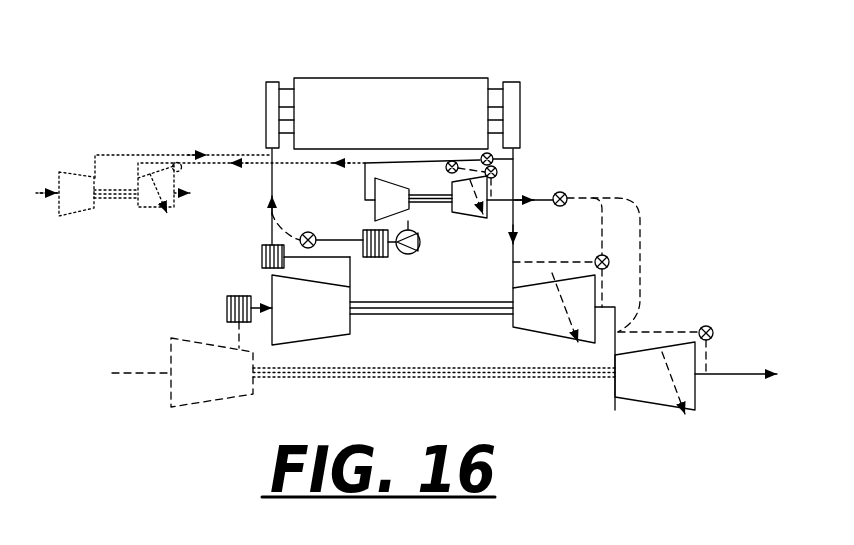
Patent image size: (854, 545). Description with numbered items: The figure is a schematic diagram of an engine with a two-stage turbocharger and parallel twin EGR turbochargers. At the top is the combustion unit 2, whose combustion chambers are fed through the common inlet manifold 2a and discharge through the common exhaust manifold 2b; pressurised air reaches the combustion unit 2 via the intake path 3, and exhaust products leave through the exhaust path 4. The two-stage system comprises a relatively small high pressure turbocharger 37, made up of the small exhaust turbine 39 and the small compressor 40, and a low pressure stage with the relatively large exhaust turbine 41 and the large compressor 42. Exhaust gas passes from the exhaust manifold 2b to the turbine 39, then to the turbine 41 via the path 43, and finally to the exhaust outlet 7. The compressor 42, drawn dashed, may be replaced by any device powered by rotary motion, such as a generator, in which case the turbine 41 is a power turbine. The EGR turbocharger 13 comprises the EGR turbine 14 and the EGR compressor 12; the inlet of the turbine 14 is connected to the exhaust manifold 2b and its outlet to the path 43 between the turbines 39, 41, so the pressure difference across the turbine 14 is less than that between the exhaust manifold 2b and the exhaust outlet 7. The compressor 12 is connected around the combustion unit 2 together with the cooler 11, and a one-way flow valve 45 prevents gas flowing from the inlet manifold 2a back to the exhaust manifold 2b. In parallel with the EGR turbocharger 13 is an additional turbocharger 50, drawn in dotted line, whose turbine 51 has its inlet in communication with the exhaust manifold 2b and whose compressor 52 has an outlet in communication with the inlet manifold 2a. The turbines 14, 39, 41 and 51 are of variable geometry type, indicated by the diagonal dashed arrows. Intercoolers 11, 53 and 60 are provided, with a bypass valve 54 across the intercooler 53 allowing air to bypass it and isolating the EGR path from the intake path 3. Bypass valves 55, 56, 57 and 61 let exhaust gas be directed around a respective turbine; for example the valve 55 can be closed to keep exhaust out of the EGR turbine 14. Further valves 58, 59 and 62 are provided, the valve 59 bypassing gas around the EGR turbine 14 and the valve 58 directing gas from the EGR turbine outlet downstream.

The combustion unit 2 is at (440, 92).
The inlet manifold 2a is at (267, 93).
The exhaust manifold 2b is at (513, 95).
The intake path 3 is at (268, 212).
The exhaust path 4 is at (515, 190).
The exhaust outlet 7 is at (743, 373).
The cooler 11 is at (370, 258).
The EGR compressor 12 is at (365, 206).
The EGR turbocharger 13 is at (433, 206).
The EGR turbine 14 is at (469, 216).
The high pressure turbocharger 37 is at (432, 324).
The exhaust turbine 39 is at (545, 334).
The compressor 40 is at (322, 338).
The exhaust turbine 41 is at (662, 406).
The compressor 42 is at (197, 407).
The path 43 is at (618, 332).
The one-way flow valve 45 is at (410, 255).
The turbocharger 50 is at (113, 206).
The turbine 51 is at (148, 208).
The compressor 52 is at (80, 173).
The intercooler 53 is at (262, 257).
The bypass valve 54 is at (308, 231).
The bypass valve 55 is at (447, 169).
The bypass valve 56 is at (610, 262).
The bypass valve 57 is at (177, 162).
The valve 58 is at (558, 206).
The valve 59 is at (497, 172).
The intercooler 60 is at (227, 309).
The bypass valve 61 is at (713, 330).
The valve 62 is at (493, 157).